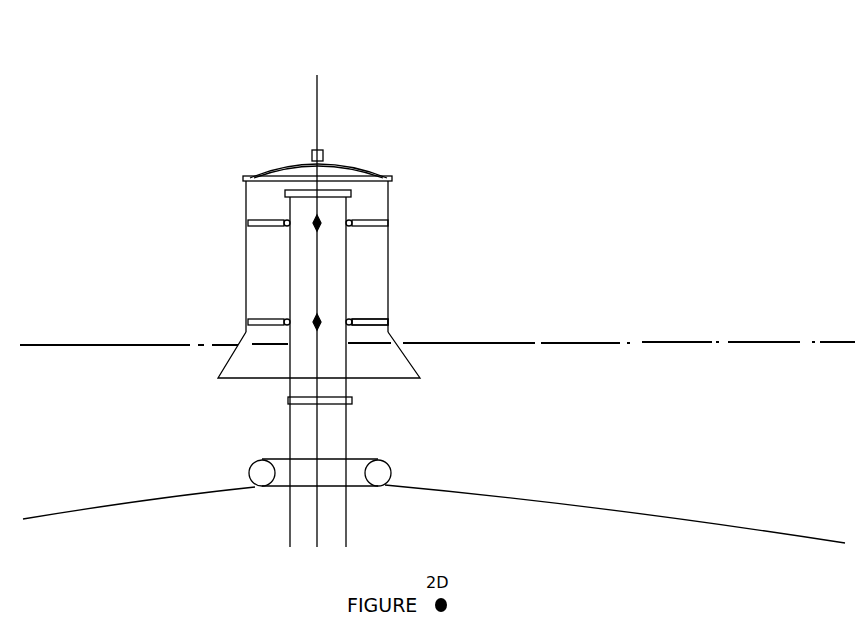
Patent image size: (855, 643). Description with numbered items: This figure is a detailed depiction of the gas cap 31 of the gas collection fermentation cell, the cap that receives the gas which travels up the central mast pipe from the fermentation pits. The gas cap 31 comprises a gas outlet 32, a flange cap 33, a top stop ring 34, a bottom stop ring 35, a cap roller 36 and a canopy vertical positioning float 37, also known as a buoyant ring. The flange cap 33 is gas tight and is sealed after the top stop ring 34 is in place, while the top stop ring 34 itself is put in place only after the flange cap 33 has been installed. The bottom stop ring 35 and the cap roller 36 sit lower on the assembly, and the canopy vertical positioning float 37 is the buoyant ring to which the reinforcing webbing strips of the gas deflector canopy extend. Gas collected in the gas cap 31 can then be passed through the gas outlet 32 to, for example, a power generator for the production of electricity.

The gas cap 31 is at (245, 248).
The gas outlet 32 is at (327, 152).
The flange cap 33 is at (382, 169).
The top stop ring 34 is at (352, 208).
The bottom stop ring 35 is at (396, 318).
The cap roller 36 is at (354, 401).
The canopy vertical positioning float 37 is at (393, 467).